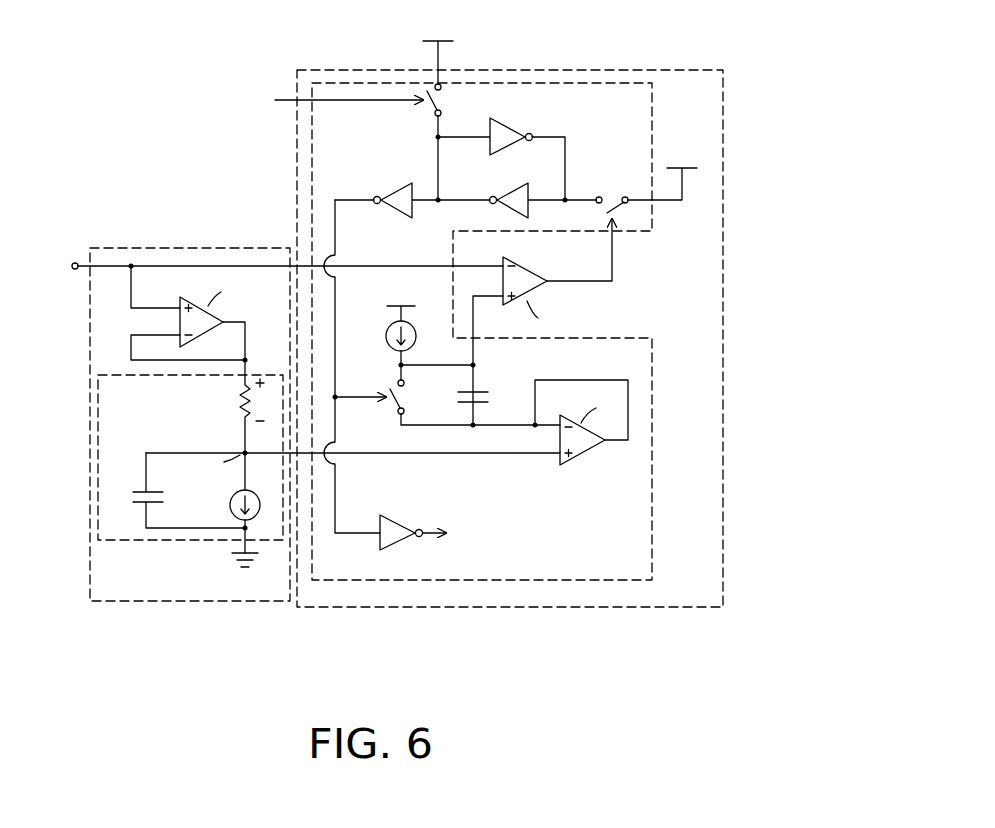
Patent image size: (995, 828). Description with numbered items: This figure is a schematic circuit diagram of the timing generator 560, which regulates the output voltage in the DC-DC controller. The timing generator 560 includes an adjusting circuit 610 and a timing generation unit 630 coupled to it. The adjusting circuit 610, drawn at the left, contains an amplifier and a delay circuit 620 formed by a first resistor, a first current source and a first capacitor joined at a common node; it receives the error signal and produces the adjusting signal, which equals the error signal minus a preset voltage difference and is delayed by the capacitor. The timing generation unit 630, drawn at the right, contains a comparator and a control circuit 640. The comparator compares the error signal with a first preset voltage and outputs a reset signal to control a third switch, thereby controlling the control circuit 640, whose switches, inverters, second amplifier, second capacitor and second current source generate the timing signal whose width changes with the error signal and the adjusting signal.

The timing generator 560 is at (698, 675).
The adjusting circuit 610 is at (115, 247).
The delay circuit 620 is at (95, 401).
The timing generation unit 630 is at (680, 69).
The control circuit 640 is at (655, 359).